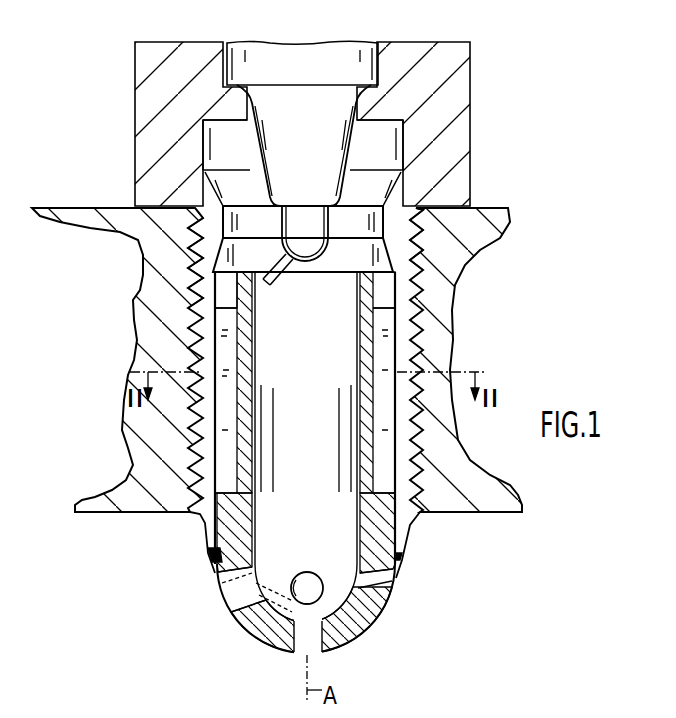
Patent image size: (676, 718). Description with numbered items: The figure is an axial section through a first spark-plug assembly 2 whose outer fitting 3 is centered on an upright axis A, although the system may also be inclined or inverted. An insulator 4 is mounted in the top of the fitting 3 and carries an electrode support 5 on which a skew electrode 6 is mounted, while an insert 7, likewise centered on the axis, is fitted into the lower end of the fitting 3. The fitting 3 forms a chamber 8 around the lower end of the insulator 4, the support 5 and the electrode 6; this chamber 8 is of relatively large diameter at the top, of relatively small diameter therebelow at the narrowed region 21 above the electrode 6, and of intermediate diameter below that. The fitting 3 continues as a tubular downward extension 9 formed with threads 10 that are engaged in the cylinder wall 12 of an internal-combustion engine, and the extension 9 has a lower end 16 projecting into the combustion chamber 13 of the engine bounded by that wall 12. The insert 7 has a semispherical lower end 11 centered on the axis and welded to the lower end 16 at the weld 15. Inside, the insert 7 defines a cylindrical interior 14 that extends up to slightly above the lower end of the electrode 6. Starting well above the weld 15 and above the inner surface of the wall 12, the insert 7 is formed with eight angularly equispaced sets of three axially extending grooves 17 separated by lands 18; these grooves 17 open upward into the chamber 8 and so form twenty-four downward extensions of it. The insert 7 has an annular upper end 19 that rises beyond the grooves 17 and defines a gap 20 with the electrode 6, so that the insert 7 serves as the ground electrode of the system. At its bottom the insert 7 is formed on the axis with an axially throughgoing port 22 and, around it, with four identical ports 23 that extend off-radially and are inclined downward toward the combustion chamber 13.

The spark-plug assembly 2 is at (553, 206).
The outer fitting 3 is at (455, 85).
The insulator 4 is at (347, 50).
The electrode support 5 is at (316, 226).
The skew electrode 6 is at (277, 283).
The insert 7 is at (378, 533).
The chamber 8 is at (395, 140).
The tubular downward extension 9 is at (462, 274).
The threads 10 is at (435, 230).
The semispherical lower end 11 is at (356, 628).
The cylinder wall 12 is at (125, 513).
The combustion chamber 13 is at (510, 590).
The cylindrical interior 14 is at (272, 540).
The weld 15 is at (400, 576).
The lower end 16 is at (400, 527).
The axially extending grooves 17 is at (393, 352).
The lands 18 is at (395, 300).
The annular upper end 19 is at (200, 285).
The gap 20 is at (258, 292).
The small-diameter portion of chamber 21 is at (253, 206).
The axially throughgoing port 22 is at (305, 650).
The ports 23 is at (232, 600).